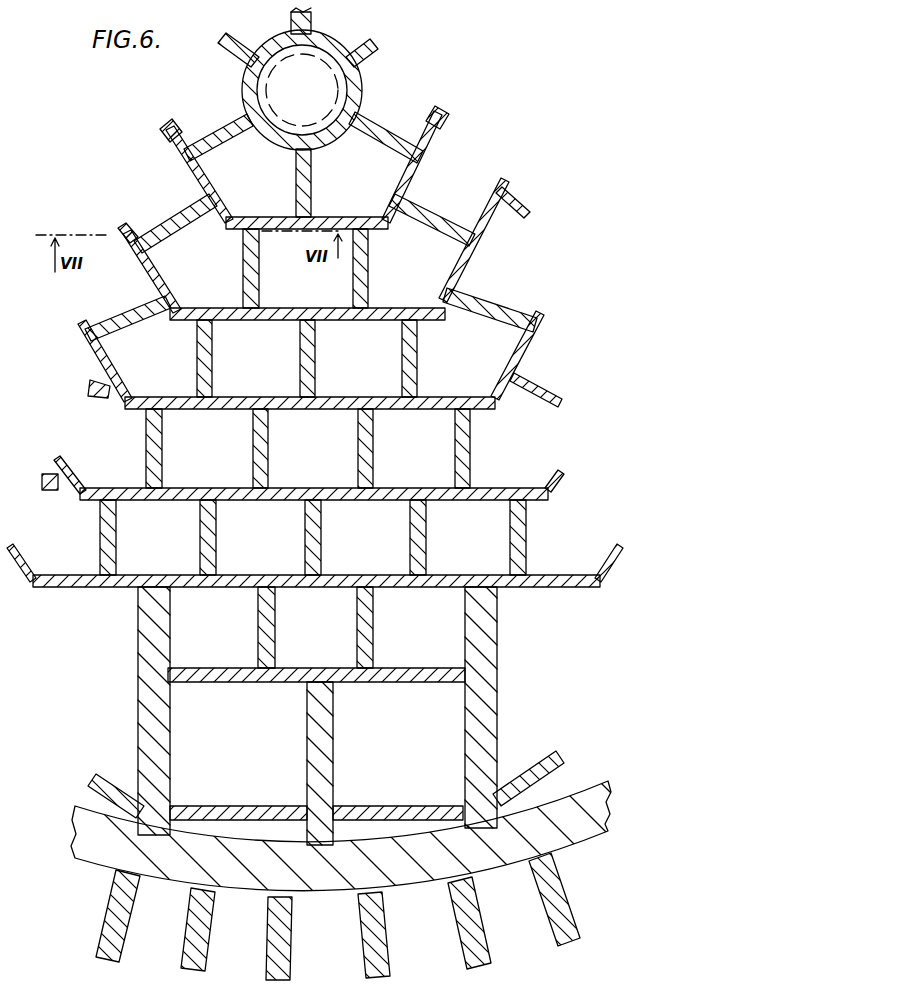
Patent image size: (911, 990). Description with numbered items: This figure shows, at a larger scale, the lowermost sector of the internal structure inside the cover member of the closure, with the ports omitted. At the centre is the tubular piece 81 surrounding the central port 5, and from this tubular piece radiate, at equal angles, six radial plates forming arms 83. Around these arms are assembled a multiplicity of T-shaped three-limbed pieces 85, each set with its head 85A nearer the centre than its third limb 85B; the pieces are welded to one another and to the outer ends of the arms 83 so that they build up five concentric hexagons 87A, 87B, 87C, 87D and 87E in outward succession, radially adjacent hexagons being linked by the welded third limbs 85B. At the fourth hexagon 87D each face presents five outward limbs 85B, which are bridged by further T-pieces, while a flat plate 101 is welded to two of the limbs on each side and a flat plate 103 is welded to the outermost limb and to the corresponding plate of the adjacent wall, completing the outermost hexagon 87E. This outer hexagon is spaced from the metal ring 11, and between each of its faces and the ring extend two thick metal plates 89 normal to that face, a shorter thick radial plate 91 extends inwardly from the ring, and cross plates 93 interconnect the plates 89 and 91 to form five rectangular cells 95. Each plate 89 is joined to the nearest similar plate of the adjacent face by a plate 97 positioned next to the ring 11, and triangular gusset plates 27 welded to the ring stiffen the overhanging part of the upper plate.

The central port 5 is at (337, 88).
The metal ring 11 is at (573, 843).
The triangular gusset plates 27 is at (383, 953).
The tubular piece 81 is at (327, 45).
The radial arms 83 is at (312, 20).
The T-shaped three-limbed pieces 85 is at (186, 222).
The head 85A is at (223, 396).
The third limb 85B is at (453, 232).
The first hexagon 87A is at (428, 132).
The second hexagon 87B is at (503, 181).
The third hexagon 87C is at (540, 318).
The fourth hexagon 87D is at (557, 470).
The outermost hexagon 87E is at (547, 581).
The thick metal plates 89 is at (157, 647).
The radial metal plate 91 is at (323, 747).
The cross plates 93 is at (227, 683).
The rectangular cells 95 is at (256, 622).
The connecting plate 97 is at (98, 773).
The flat plate 101 is at (159, 586).
The flat plate 103 is at (25, 574).